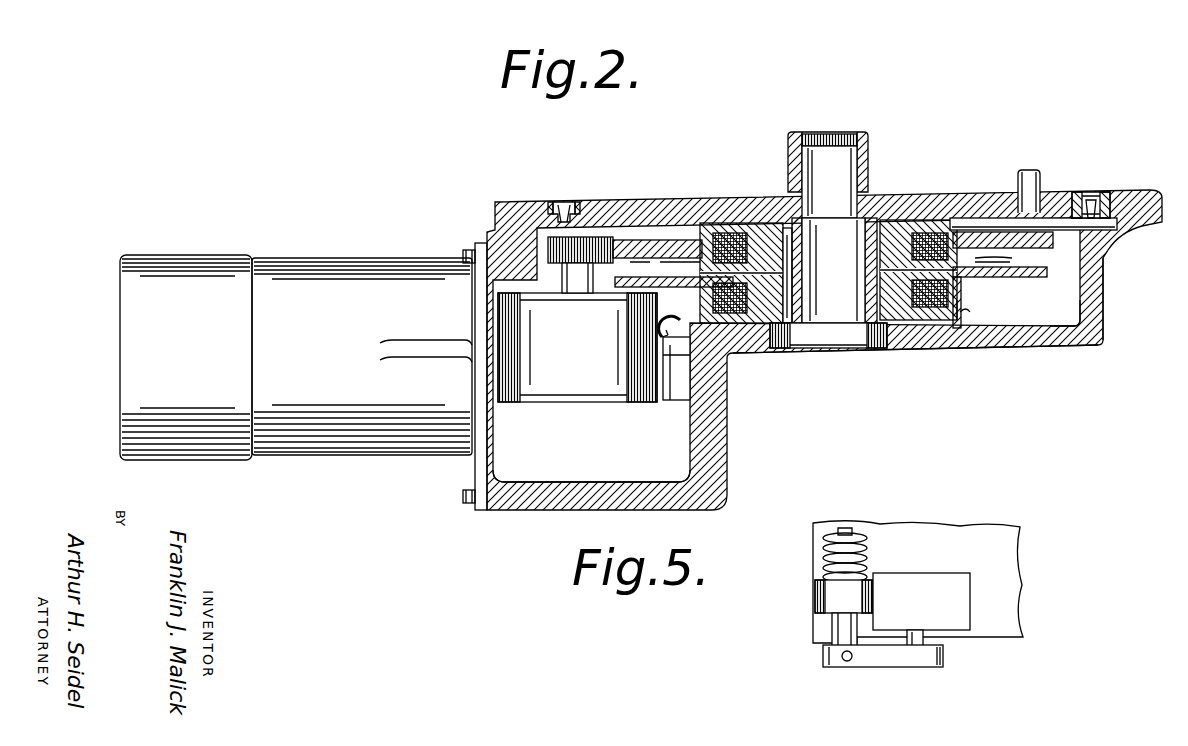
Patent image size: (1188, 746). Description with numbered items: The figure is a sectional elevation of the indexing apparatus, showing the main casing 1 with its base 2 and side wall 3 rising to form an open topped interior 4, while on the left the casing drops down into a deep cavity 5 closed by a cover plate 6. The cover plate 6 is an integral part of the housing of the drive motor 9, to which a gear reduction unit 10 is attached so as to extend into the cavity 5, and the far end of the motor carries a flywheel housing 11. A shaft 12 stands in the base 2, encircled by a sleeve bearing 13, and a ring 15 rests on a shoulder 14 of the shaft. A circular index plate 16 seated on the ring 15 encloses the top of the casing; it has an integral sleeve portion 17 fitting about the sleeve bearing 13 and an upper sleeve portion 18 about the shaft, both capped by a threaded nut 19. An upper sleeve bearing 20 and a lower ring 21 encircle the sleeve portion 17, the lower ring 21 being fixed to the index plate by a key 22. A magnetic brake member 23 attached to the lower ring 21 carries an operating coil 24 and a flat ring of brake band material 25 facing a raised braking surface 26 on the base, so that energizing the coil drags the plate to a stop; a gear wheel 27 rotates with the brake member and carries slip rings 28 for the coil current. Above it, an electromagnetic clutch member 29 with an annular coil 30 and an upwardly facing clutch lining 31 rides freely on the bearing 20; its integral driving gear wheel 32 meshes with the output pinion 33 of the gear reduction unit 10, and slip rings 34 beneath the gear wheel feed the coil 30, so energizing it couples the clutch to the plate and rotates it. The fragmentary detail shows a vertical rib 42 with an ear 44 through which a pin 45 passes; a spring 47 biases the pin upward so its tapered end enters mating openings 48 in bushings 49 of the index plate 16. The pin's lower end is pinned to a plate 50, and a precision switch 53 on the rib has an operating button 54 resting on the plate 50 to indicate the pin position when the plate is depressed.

In FIG. 2, the main casing 1 is at (737, 414).
In FIG. 2, the base 2 is at (1017, 336).
In FIG. 2, the side wall 3 is at (1106, 286).
In FIG. 2, the open topped interior 4 is at (1058, 312).
In FIG. 2, the deep cavity 5 is at (583, 465).
In FIG. 2, the cover plate 6 is at (477, 243).
In FIG. 2, the drive motor 9 is at (318, 272).
In FIG. 2, the gear reduction unit 10 is at (540, 320).
In FIG. 2, the flywheel housing 11 is at (135, 328).
In FIG. 2, the shaft 12 is at (831, 312).
In FIG. 2, the sleeve bearing 13 is at (780, 228).
In FIG. 2, the shoulder 14 is at (820, 222).
In FIG. 2, the ring 15 is at (877, 222).
In FIG. 2, the circular index plate 16 is at (975, 190).
In FIG. 2, the sleeve portion 17 is at (897, 222).
In FIG. 2, the upper sleeve portion 18 is at (866, 172).
In FIG. 2, the threaded nut 19 is at (854, 132).
In FIG. 2, the upper sleeve bearing 20 is at (757, 226).
In FIG. 2, the lower ring 21 is at (817, 354).
In FIG. 2, the key 22 is at (903, 305).
In FIG. 2, the magnetic brake member 23 is at (958, 303).
In FIG. 2, the operating coil 24 is at (937, 316).
In FIG. 2, the brake band material 25 is at (922, 313).
In FIG. 2, the raised braking surface 26 is at (967, 322).
In FIG. 2, the gear wheel 27 is at (1040, 277).
In FIG. 2, the slip rings 28 is at (1022, 277).
In FIG. 2, the electromagnetic clutch member 29 is at (718, 227).
In FIG. 2, the annular coil 30 is at (720, 230).
In FIG. 2, the clutch lining 31 is at (737, 236).
In FIG. 2, the driving gear wheel 32 is at (647, 240).
In FIG. 2, the output pinion 33 is at (607, 240).
In FIG. 2, the slip rings 34 is at (1032, 254).
In FIG. 5, the vertical rib 42 is at (992, 532).
In FIG. 5, the ear 44 is at (834, 596).
In FIG. 5, the pin 45 is at (840, 626).
In FIG. 5, the spring 47 is at (818, 549).
In FIG. 2, the mating openings 48 is at (572, 215).
In FIG. 2, the bushings 49 is at (556, 202).
In FIG. 5, the plate 50 is at (888, 660).
In FIG. 5, the precision switch 53 is at (956, 597).
In FIG. 5, the operating button 54 is at (915, 644).